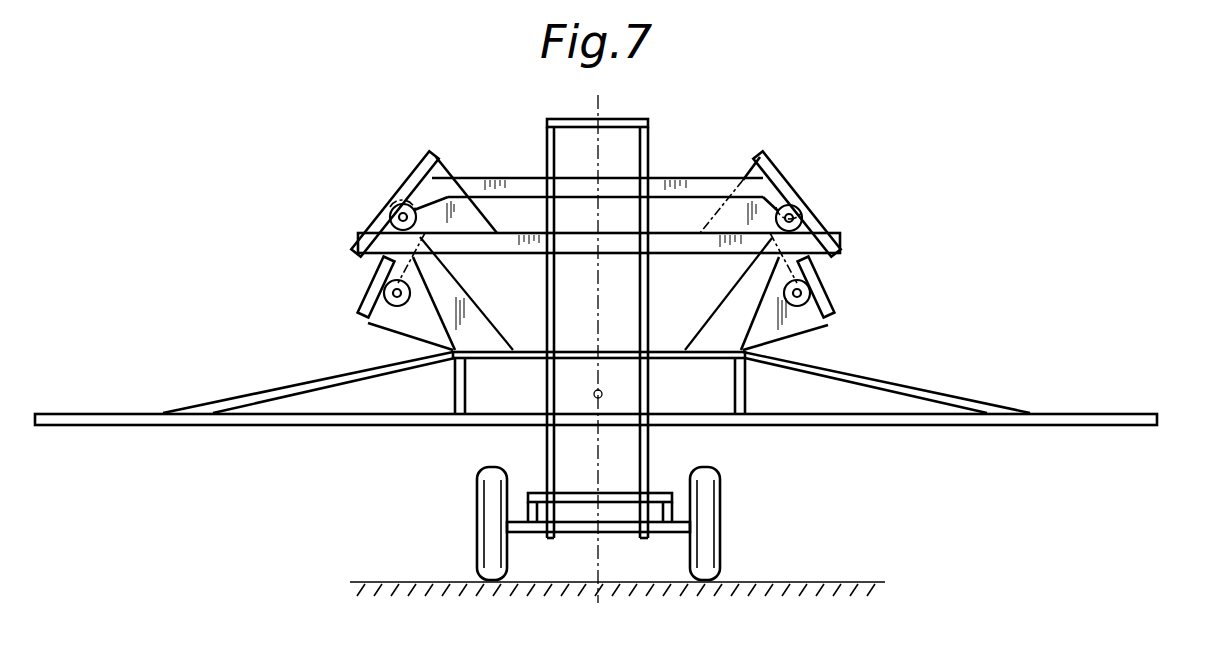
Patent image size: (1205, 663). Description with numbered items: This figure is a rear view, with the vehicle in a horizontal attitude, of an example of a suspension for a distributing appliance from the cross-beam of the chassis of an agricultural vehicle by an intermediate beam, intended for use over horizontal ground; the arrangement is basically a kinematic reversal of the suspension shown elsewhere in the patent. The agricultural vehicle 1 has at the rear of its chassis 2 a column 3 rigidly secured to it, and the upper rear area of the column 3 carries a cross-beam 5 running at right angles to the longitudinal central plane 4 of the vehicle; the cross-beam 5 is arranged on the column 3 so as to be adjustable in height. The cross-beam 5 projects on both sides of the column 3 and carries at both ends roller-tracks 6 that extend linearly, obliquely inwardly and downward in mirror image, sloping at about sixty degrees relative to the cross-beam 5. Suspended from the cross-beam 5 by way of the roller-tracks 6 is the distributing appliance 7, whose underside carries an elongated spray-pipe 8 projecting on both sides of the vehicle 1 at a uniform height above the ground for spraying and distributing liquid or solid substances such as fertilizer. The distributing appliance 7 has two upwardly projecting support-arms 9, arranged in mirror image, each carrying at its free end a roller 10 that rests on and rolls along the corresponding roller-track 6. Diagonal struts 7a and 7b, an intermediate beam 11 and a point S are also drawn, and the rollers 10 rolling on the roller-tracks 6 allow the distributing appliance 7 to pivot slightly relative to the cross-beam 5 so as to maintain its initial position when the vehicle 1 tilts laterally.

The agricultural vehicle 1 is at (462, 513).
The chassis 2 is at (580, 532).
The column 3 is at (643, 152).
The longitudinal central plane 4 is at (600, 108).
The cross-beam 5 is at (695, 178).
The roller-tracks 6 is at (432, 170).
The distributing appliance 7 is at (203, 407).
The left diagonal strut 7a is at (463, 310).
The right diagonal strut 7b is at (725, 318).
The spray-pipe 8 is at (263, 418).
The support-arms 9 is at (385, 258).
The roller 10 is at (390, 220).
The lower cross bar 11 is at (689, 243).
The center point S is at (607, 393).